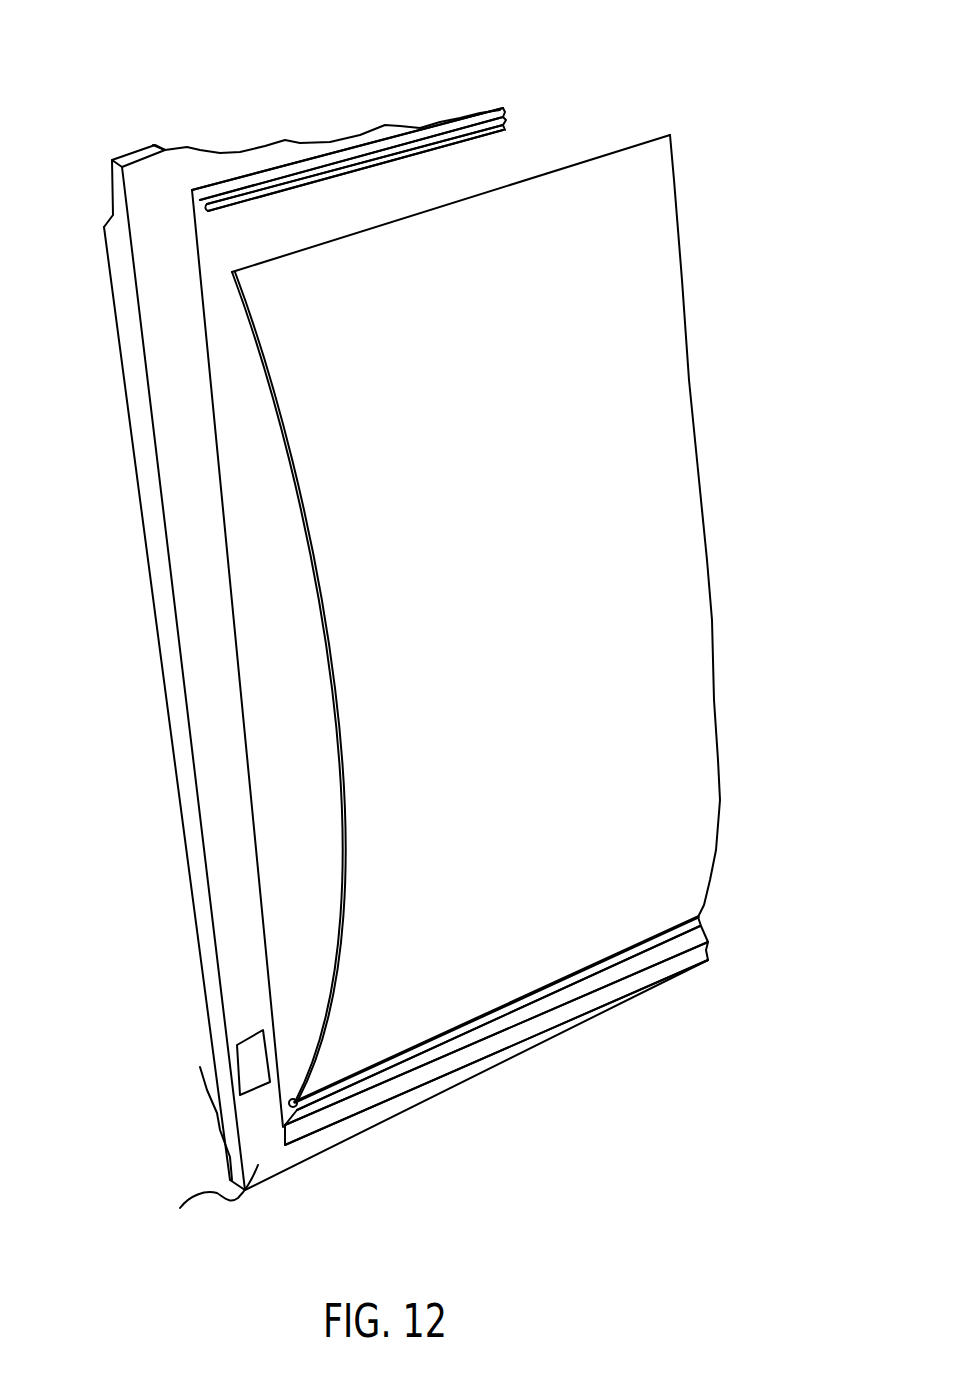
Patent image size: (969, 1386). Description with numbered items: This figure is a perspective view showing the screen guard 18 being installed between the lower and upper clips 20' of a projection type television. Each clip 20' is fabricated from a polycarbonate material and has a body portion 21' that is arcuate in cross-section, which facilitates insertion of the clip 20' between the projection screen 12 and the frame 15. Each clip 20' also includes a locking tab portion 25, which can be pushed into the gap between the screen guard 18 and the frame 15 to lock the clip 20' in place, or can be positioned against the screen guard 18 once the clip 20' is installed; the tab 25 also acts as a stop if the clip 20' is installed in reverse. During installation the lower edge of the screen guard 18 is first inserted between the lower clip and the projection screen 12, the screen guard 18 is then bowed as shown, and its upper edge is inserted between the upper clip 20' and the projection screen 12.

The projection screen 12 is at (255, 670).
The frame 15 is at (152, 217).
The screen guard 18 is at (676, 653).
The clip 20' is at (511, 576).
The body portion 21' is at (457, 586).
The locking tab portion 25 is at (405, 145).